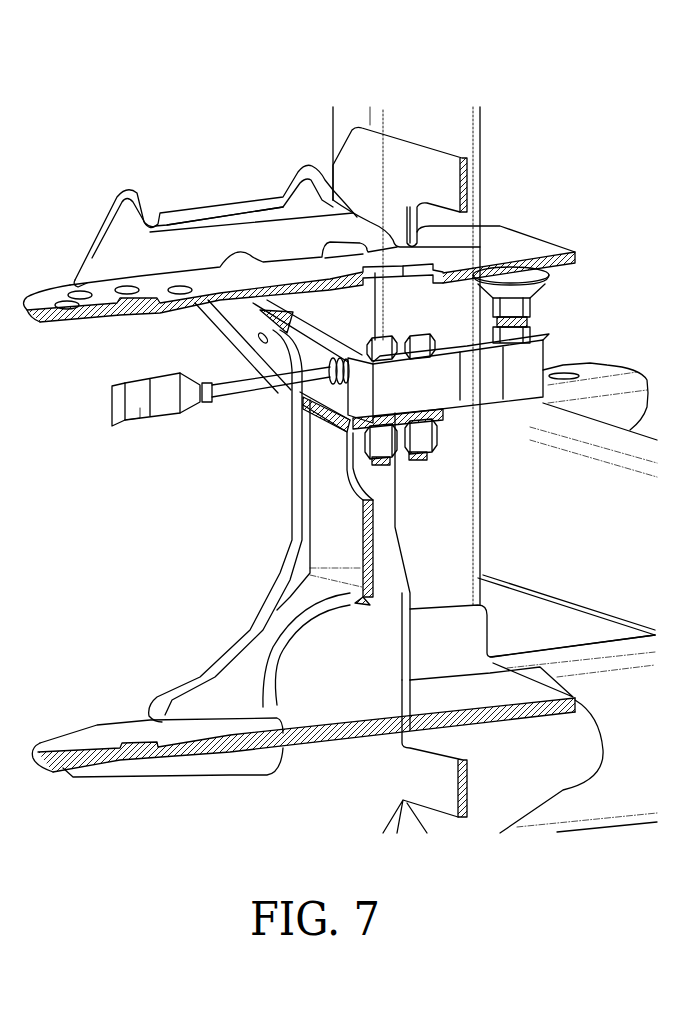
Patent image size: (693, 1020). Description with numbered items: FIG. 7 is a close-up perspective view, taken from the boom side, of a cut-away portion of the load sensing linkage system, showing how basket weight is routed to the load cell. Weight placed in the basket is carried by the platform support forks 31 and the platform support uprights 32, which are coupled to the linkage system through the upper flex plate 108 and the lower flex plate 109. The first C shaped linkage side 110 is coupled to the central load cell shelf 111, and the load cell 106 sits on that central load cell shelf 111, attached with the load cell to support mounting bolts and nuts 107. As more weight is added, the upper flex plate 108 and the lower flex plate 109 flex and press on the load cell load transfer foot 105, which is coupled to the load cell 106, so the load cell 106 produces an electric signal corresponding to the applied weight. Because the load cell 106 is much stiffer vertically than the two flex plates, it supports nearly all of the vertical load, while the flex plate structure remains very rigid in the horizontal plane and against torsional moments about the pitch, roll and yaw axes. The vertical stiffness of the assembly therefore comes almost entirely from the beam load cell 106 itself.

The platform support forks 31 is at (583, 650).
The platform support uprights 32 is at (455, 556).
The load cell load transfer foot 105 is at (540, 287).
The load cell 106 is at (547, 357).
The load cell to support mounting bolts and nuts 107 is at (418, 333).
The upper flex plate 108 is at (505, 243).
The lower flex plate 109 is at (193, 733).
The first C shaped linkage side 110 is at (240, 360).
The central load cell shelf 111 is at (447, 420).